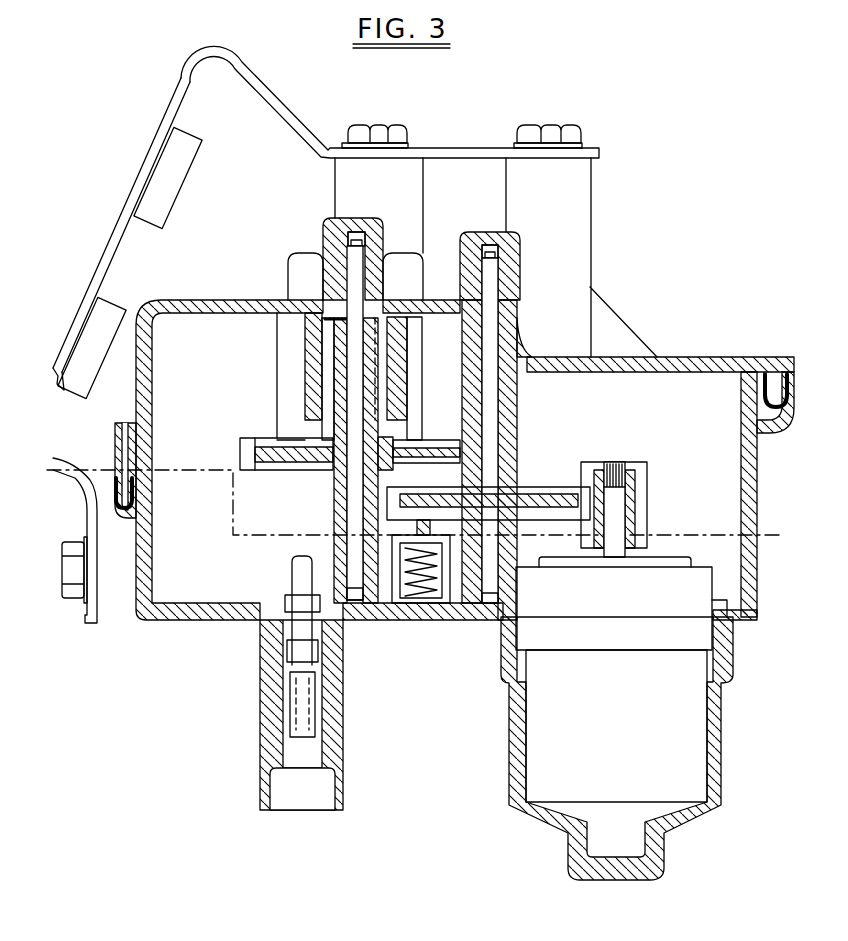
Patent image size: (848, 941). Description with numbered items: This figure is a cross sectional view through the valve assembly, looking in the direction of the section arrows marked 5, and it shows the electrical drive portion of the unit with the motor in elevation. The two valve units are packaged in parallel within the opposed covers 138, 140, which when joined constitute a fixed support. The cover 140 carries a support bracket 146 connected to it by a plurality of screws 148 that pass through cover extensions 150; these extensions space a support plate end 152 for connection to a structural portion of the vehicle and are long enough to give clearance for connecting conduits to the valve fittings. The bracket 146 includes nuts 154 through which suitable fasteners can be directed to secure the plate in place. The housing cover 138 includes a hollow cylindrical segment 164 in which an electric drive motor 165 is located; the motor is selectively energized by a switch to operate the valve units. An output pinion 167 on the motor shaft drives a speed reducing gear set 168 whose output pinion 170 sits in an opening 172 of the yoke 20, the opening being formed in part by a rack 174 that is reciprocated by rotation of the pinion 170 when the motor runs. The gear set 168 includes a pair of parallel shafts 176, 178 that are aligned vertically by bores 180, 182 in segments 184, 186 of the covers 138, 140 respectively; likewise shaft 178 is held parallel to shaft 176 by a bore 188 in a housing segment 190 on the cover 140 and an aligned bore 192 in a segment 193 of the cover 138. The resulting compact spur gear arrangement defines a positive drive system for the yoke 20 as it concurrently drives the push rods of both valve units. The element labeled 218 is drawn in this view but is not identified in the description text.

The yoke 20 is at (306, 402).
The section line 5- 5 is at (55, 468).
The cover 138 is at (724, 644).
The cover 140 is at (745, 353).
The support bracket 146 is at (268, 45).
The screws 148 is at (378, 126).
The cover extensions 150 is at (405, 197).
The support plate end 152 is at (121, 220).
The nuts 154 is at (200, 149).
The hollow cylindrical segment 164 is at (714, 750).
The electric drive motor 165 is at (557, 762).
The output pinion 167 is at (640, 492).
The speed reducing gear set 168 is at (553, 486).
The output pinion 170 is at (333, 378).
The opening 172 is at (308, 347).
The rack 174 is at (383, 380).
The shaft 176 is at (487, 320).
The shaft 178 is at (330, 250).
The bore 180 is at (490, 277).
The bore 182 is at (487, 572).
The segment 184 is at (505, 294).
The segment 186 is at (509, 612).
The bore 188 is at (350, 283).
The housing segment 190 is at (375, 245).
The bore 192 is at (358, 492).
The segment 193 is at (340, 527).
The spring 218 is at (428, 605).